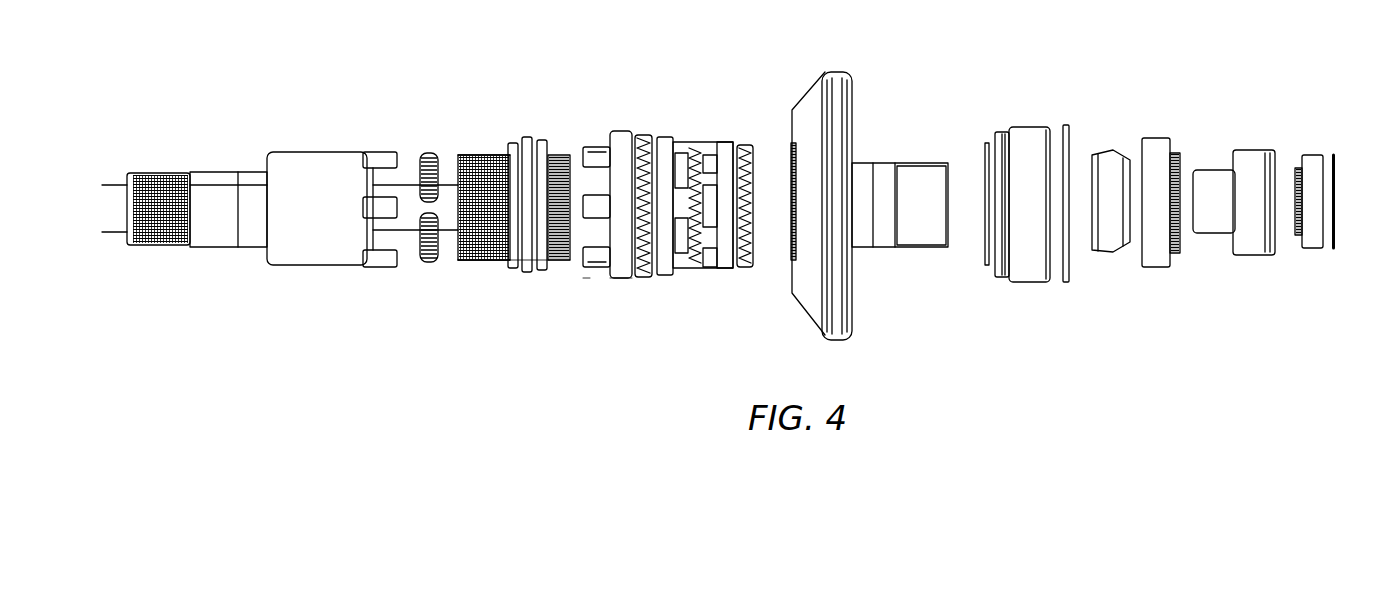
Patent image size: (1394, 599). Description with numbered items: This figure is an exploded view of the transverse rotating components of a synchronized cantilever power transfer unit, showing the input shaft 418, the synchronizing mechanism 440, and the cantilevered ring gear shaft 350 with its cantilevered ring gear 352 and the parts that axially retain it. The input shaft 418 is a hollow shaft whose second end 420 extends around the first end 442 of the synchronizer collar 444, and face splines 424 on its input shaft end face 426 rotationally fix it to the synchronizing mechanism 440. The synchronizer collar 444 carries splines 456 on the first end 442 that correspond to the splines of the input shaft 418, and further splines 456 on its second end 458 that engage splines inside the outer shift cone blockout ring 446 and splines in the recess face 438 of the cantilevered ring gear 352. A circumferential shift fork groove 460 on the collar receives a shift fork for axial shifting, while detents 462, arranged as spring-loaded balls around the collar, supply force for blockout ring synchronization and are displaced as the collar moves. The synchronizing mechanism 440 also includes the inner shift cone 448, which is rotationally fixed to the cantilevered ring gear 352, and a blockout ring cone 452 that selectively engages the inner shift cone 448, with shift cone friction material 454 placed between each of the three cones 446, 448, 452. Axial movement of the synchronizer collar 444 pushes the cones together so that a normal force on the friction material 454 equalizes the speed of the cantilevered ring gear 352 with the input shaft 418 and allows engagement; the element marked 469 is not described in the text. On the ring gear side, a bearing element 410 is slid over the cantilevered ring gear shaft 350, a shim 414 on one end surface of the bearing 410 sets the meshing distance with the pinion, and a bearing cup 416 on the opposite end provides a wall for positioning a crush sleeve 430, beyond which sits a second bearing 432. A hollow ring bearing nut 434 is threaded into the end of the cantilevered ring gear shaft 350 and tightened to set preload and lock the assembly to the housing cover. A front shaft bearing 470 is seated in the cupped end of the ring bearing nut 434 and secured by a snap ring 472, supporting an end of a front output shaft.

The input shaft 418 is at (273, 152).
The second end 420 is at (380, 238).
The face splines 424 is at (386, 152).
The input shaft end face 426 is at (398, 207).
The detents 462 is at (428, 152).
The first end 442 is at (477, 146).
The synchronizer collar 444 is at (486, 145).
The shift fork groove 460 is at (538, 145).
The second end 458 is at (558, 152).
The splines 456 is at (560, 272).
The outer shift cone blockout ring 446 is at (620, 279).
The armature 469 is at (591, 273).
The inner shift cone 448 is at (665, 278).
The shift cone friction material 454 is at (745, 148).
The blockout ring cone 452 is at (744, 270).
The synchronizing mechanism 440 is at (576, 359).
The cantilevered ring gear 352 is at (836, 72).
The recess face 438 is at (793, 290).
The cantilevered ring gear shaft 350 is at (875, 248).
The shim 414 is at (989, 266).
The bearing element 410 is at (1045, 283).
The bearing cup 416 is at (1065, 125).
The crush sleeve 430 is at (1108, 253).
The second bearing 432 is at (1165, 268).
The ring bearing nut 434 is at (1250, 257).
The front shaft bearing 470 is at (1312, 155).
The snap ring 472 is at (1335, 236).